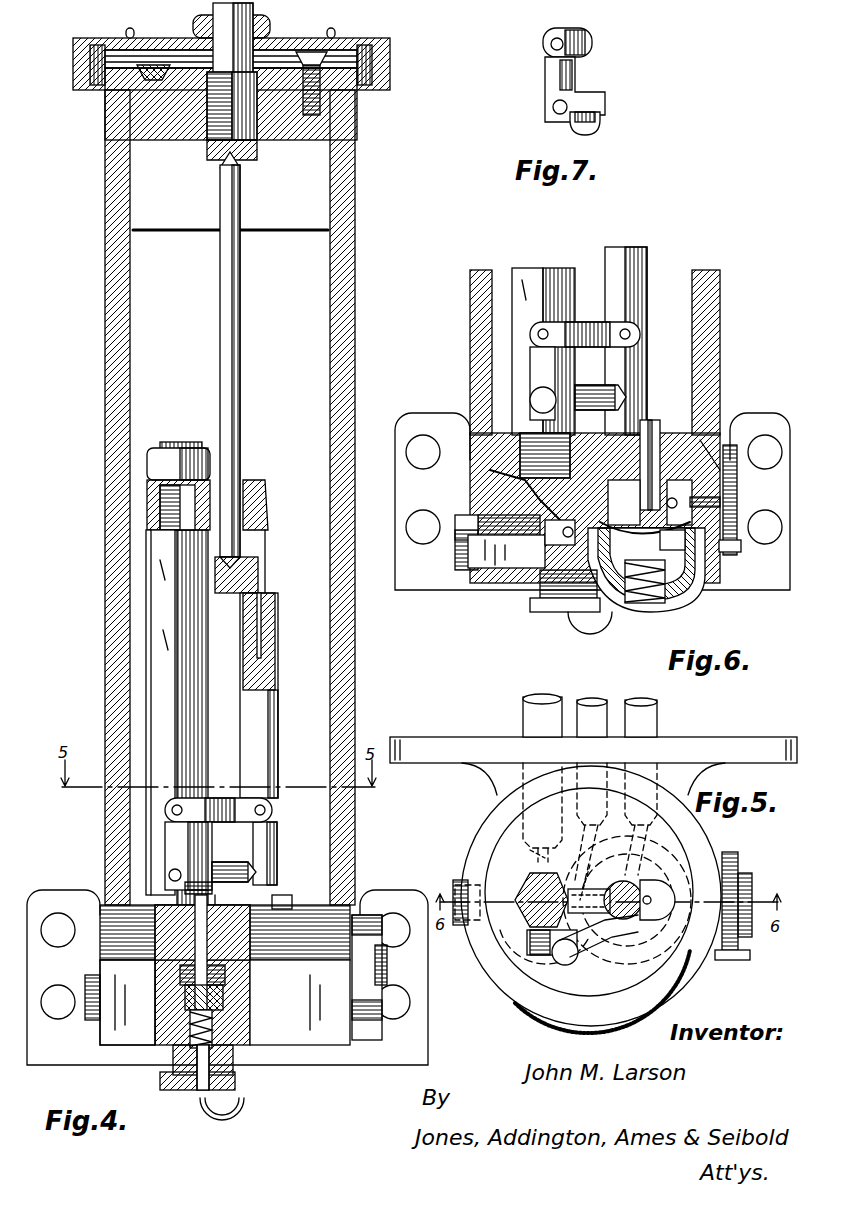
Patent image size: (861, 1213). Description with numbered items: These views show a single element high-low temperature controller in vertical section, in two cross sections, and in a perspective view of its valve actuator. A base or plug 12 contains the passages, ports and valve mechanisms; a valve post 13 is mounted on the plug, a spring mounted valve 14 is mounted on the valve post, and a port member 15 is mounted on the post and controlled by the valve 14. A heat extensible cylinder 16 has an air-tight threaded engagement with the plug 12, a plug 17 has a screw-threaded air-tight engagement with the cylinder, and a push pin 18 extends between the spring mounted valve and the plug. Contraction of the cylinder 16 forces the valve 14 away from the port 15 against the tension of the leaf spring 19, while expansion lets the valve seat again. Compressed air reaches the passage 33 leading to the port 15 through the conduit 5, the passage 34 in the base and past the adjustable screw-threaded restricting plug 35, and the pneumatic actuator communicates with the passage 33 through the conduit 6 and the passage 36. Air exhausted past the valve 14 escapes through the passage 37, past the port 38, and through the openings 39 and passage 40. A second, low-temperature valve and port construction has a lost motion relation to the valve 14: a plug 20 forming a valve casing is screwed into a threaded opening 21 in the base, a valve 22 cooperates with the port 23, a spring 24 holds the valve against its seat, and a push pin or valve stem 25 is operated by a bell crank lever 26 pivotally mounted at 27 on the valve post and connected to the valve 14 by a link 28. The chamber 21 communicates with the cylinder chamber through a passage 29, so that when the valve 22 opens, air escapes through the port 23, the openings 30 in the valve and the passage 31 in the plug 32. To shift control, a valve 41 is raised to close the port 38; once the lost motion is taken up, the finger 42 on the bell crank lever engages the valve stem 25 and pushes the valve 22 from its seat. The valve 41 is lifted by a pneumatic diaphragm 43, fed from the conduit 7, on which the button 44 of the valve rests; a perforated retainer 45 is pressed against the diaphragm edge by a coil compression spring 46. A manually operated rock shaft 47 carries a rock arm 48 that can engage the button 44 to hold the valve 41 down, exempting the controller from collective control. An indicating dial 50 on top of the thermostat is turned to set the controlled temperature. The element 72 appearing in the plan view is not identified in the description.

In FIG. 5, the conduit 5 is at (530, 705).
In FIG. 5, the conduit 6 is at (586, 712).
In FIG. 5, the conduit 7 is at (655, 712).
In FIG. 4, the base or plug 12 is at (130, 1035).
In FIG. 6, the base or plug 12 is at (672, 445).
In FIG. 4, the valve post 13 is at (155, 633).
In FIG. 6, the valve post 13 is at (520, 300).
In FIG. 5, the valve post 13 is at (525, 915).
In FIG. 4, the spring mounted valve 14 is at (278, 864).
In FIG. 6, the spring mounted valve 14 is at (640, 372).
In FIG. 5, the spring mounted valve 14 is at (627, 887).
In FIG. 4, the port member 15 is at (232, 862).
In FIG. 6, the port member 15 is at (610, 386).
In FIG. 4, the heat extensible cylinder 16 is at (343, 694).
In FIG. 6, the heat extensible cylinder 16 is at (705, 316).
In FIG. 4, the plug 17 is at (352, 122).
In FIG. 4, the push pin 18 is at (232, 380).
In FIG. 4, the leaf spring 19 is at (265, 552).
In FIG. 4, the plug 20 is at (166, 1086).
In FIG. 4, the threaded opening 21 is at (175, 975).
In FIG. 4, the valve 22 is at (225, 1000).
In FIG. 4, the port 23 is at (225, 990).
In FIG. 4, the spring 24 is at (214, 1040).
In FIG. 4, the push pin or valve stem 25 is at (290, 882).
In FIG. 4, the bell crank lever 26 is at (168, 831).
In FIG. 7, the bell crank lever 26 is at (565, 88).
In FIG. 6, the bell crank lever 26 is at (542, 383).
In FIG. 5, the bell crank lever 26 is at (535, 928).
In FIG. 4, the pivot 27 is at (168, 875).
In FIG. 7, the pivot 27 is at (531, 118).
In FIG. 6, the pivot 27 is at (543, 400).
In FIG. 4, the link 28 is at (220, 800).
In FIG. 7, the link 28 is at (592, 44).
In FIG. 6, the link 28 is at (585, 334).
In FIG. 5, the link 28 is at (600, 936).
In FIG. 4, the passage 29 is at (325, 884).
In FIG. 4, the openings 30 is at (245, 1006).
In FIG. 4, the passage 31 is at (200, 1072).
In FIG. 4, the plug 32 is at (205, 1090).
In FIG. 6, the passage 33 is at (510, 545).
In FIG. 6, the passage 34 is at (525, 548).
In FIG. 5, the passage 34 is at (545, 857).
In FIG. 4, the adjustable screw-threaded restricting plug 35 is at (86, 1012).
In FIG. 6, the adjustable screw-threaded restricting plug 35 is at (490, 548).
In FIG. 5, the adjustable screw-threaded restricting plug 35 is at (460, 926).
In FIG. 6, the passage 36 is at (545, 545).
In FIG. 5, the passage 36 is at (590, 851).
In FIG. 6, the passage 37 is at (648, 422).
In FIG. 6, the port 38 is at (702, 440).
In FIG. 6, the openings 39 is at (624, 502).
In FIG. 6, the passage 40 is at (690, 512).
In FIG. 6, the valve 41 is at (706, 590).
In FIG. 4, the finger 42 is at (212, 886).
In FIG. 7, the finger 42 is at (600, 120).
In FIG. 5, the finger 42 is at (552, 955).
In FIG. 6, the pneumatic diaphragm 43 is at (672, 607).
In FIG. 6, the button 44 is at (697, 603).
In FIG. 6, the perforated retainer 45 is at (612, 625).
In FIG. 6, the coil compression spring 46 is at (645, 603).
In FIG. 6, the rock shaft 47 is at (705, 498).
In FIG. 6, the rock arm 48 is at (716, 560).
In FIG. 5, the rock arm 48 is at (733, 906).
In FIG. 4, the indicating dial 50 is at (288, 42).
In FIG. 5, the body 72 is at (670, 986).